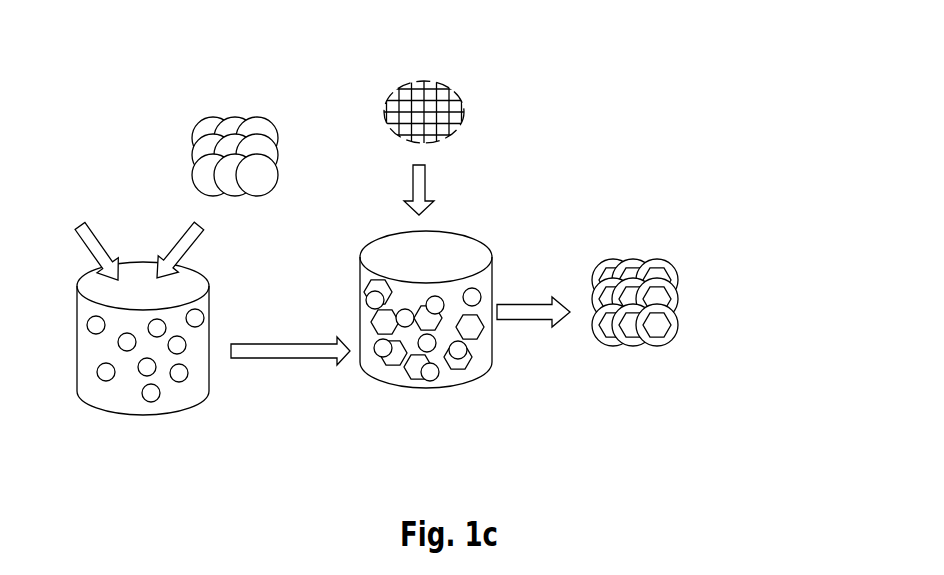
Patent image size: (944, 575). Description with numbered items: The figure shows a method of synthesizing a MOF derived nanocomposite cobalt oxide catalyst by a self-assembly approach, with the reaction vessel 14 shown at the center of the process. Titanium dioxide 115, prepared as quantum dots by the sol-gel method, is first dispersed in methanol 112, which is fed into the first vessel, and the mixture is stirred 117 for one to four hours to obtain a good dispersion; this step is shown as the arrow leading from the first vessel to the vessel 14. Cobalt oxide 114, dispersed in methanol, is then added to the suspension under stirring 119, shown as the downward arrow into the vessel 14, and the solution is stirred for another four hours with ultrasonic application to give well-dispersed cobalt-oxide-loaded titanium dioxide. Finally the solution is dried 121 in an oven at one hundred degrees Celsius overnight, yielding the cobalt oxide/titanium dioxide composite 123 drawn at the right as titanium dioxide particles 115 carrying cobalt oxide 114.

The reaction vessel / mixing container 14 is at (417, 351).
The methanol 112 is at (92, 241).
The Co3O4 114 is at (428, 110).
The titanium dioxide (TiO2) 115 is at (252, 115).
The stirring 117 is at (278, 350).
The stirring 119 is at (420, 185).
The drying 121 is at (522, 311).
The Co3O4/TiO2 composite 123 is at (614, 250).